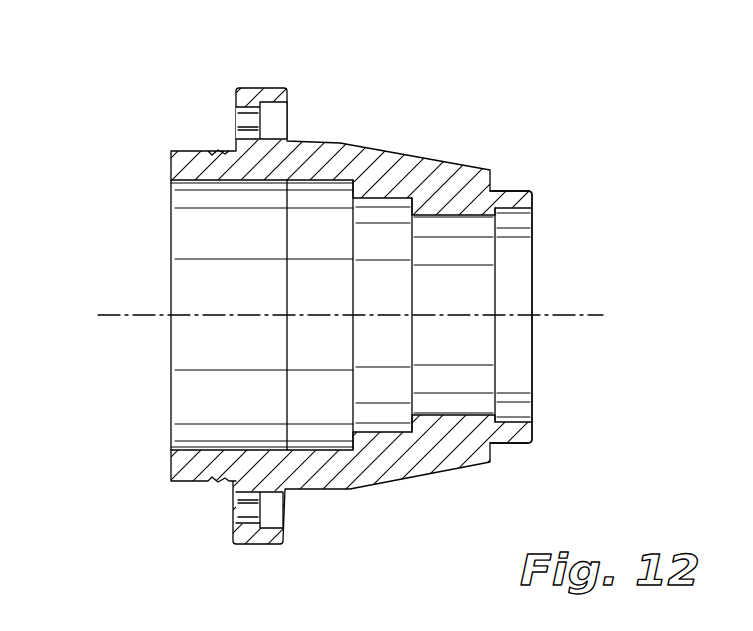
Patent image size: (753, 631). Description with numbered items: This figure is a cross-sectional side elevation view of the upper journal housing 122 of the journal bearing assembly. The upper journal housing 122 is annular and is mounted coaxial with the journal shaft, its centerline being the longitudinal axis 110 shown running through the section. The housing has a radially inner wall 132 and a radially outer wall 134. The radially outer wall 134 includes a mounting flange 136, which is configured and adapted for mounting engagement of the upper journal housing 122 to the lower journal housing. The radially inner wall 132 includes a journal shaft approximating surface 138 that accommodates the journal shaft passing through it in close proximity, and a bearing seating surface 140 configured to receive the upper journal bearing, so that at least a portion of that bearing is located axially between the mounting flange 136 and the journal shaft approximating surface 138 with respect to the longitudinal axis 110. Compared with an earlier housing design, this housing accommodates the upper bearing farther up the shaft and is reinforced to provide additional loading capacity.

The longitudinal axis 110 is at (103, 317).
The upper journal housing 122 is at (176, 96).
The radially inner wall 132 is at (203, 180).
The radially outer wall 134 is at (338, 143).
The mounting flange 136 is at (272, 88).
The journal shaft approximating surface 138 is at (472, 217).
The bearing seating surface 140 is at (298, 450).